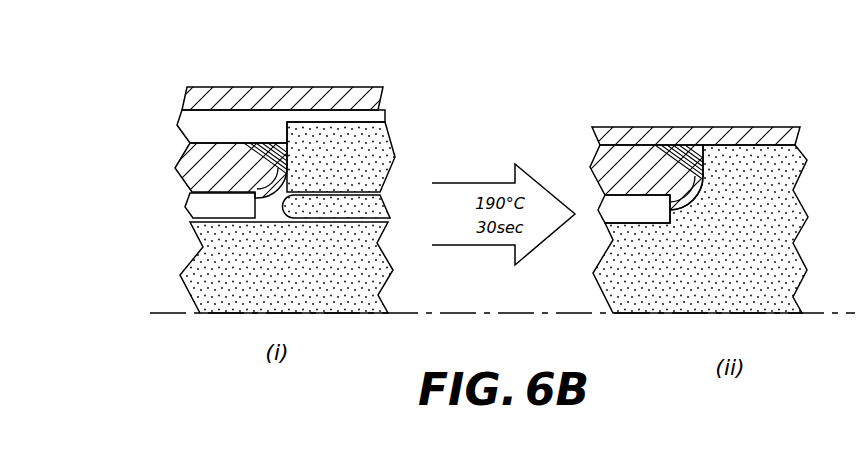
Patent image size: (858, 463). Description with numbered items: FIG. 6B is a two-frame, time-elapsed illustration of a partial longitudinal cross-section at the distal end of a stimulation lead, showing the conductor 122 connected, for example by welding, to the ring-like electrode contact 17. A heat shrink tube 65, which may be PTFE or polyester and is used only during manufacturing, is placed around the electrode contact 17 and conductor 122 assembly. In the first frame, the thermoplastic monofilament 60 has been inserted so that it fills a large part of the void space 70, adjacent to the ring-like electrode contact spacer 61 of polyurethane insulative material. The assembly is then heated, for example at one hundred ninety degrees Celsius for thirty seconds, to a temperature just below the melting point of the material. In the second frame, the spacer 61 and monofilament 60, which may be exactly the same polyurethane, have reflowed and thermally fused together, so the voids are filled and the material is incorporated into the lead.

The electrode contact 17 is at (180, 167).
The monofilament 60 is at (353, 210).
The electrode contact spacer 61 is at (334, 133).
The heat shrink tube 65 is at (218, 100).
The void space 70 is at (277, 210).
The conductor 122 is at (210, 208).